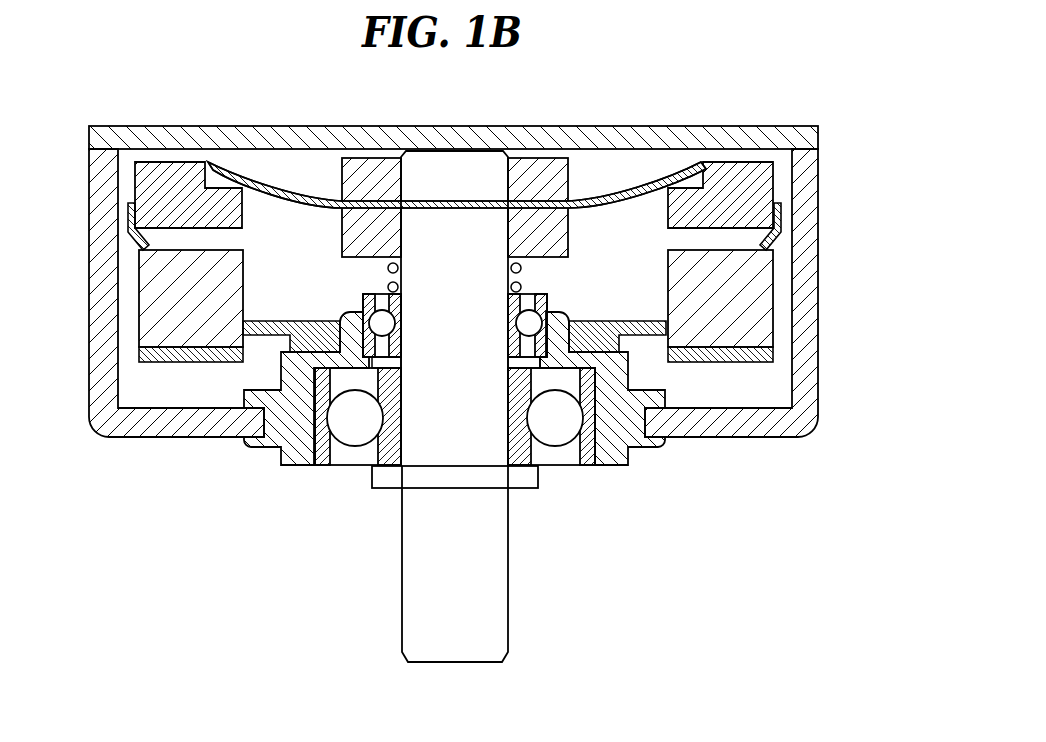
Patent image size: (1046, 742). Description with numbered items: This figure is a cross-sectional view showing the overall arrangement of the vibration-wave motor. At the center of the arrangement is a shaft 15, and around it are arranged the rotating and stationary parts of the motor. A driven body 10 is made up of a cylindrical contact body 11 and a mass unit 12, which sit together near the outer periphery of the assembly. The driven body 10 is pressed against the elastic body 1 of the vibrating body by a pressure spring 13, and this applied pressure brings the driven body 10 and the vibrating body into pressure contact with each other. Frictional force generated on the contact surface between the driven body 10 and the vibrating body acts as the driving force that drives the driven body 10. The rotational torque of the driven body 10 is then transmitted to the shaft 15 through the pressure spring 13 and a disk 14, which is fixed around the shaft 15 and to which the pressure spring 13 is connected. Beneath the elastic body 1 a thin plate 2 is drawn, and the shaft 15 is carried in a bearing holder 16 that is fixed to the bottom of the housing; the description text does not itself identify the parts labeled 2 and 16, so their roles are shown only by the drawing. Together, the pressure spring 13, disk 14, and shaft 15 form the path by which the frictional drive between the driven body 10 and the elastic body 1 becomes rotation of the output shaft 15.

The elastic body 1 is at (750, 320).
The circuit board 2 is at (750, 357).
The driven body 10 is at (521, 208).
The cylindrical contact body 11 is at (768, 242).
The mass unit 12 is at (765, 192).
The pressure spring 13 is at (617, 185).
The disk 14 is at (547, 160).
The shaft 15 is at (458, 170).
The bearing holder 16 is at (642, 334).